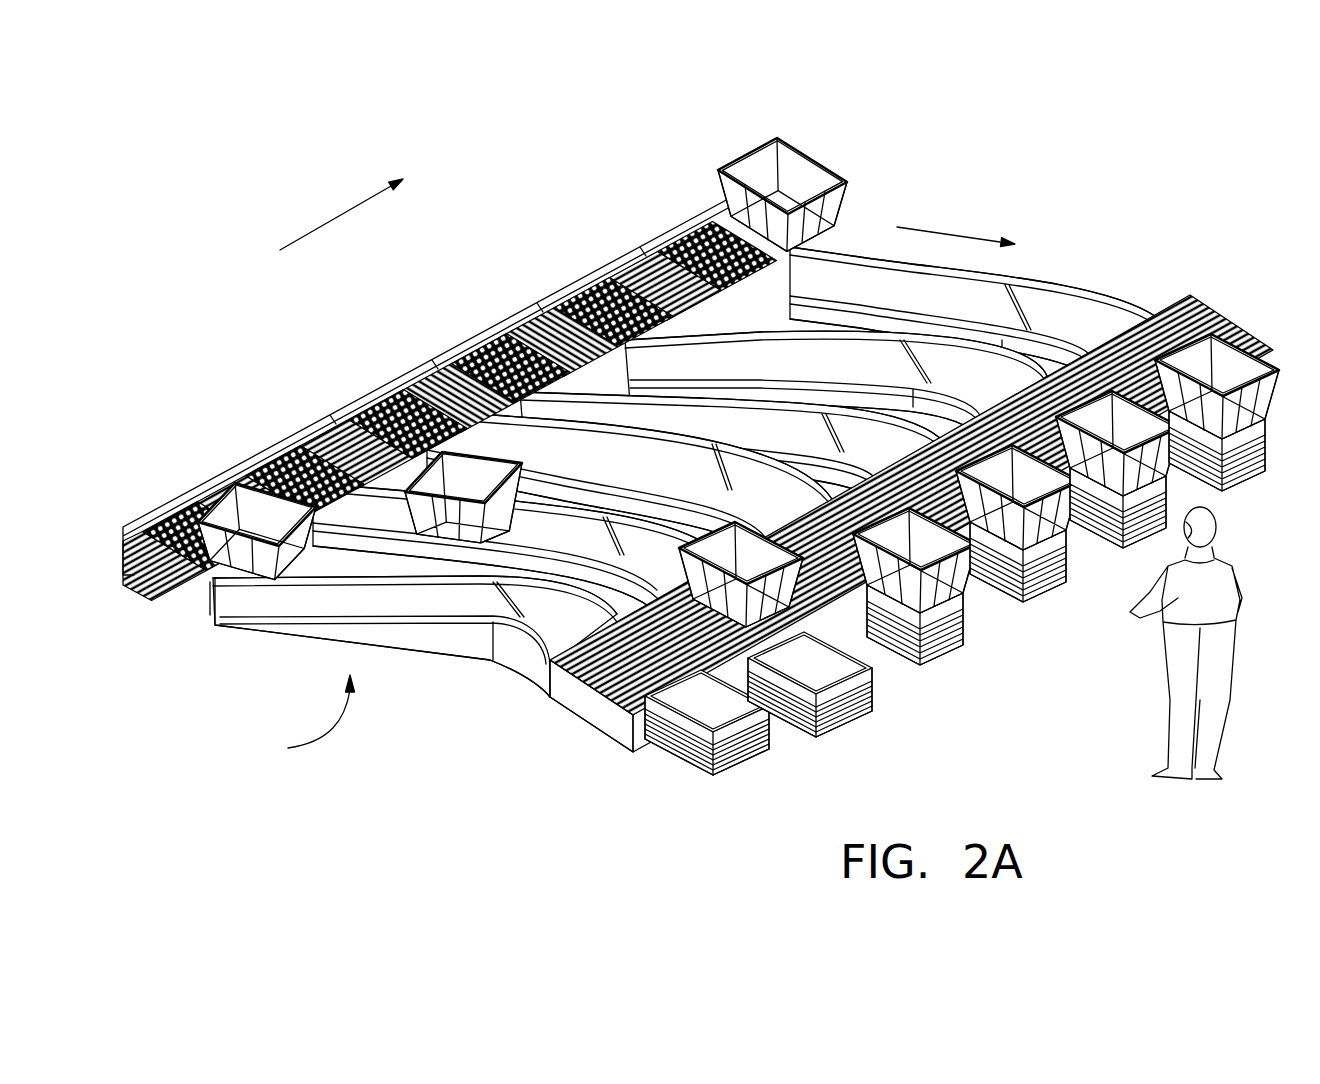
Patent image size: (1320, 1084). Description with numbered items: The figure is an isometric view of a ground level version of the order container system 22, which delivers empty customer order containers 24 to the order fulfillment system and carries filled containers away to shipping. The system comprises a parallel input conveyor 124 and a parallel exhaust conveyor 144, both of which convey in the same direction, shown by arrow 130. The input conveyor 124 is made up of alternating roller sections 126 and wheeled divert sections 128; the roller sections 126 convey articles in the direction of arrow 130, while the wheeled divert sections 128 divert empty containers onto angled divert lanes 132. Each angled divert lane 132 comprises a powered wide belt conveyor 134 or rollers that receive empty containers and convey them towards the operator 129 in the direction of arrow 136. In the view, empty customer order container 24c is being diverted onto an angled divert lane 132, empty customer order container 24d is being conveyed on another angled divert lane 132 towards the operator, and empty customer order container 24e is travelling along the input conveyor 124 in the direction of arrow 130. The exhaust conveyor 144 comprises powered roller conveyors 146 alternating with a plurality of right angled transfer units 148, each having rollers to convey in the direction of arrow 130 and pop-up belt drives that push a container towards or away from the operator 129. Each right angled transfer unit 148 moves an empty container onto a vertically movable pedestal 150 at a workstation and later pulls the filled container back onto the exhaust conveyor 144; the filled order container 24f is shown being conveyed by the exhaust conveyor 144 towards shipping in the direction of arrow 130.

The order container system 22 is at (302, 720).
The customer order container 24 is at (952, 596).
The empty customer order container 24c is at (262, 566).
The empty customer order container 24d is at (472, 528).
The empty customer order container 24e is at (785, 226).
The order container 24f is at (742, 610).
The input conveyor 124 is at (192, 598).
The roller section 126 is at (633, 240).
The wheeled divert section 128 is at (460, 352).
The operator 129 is at (1140, 706).
The arrow 130 is at (335, 218).
The angled divert lane 132 is at (440, 590).
The powered wide belt conveyor 134 is at (383, 578).
The arrow 136 is at (918, 228).
The exhaust conveyor 144 is at (596, 707).
The powered roller conveyor 146 is at (889, 527).
The right angled transfer unit 148 is at (1137, 322).
The pedestal 150 is at (737, 752).